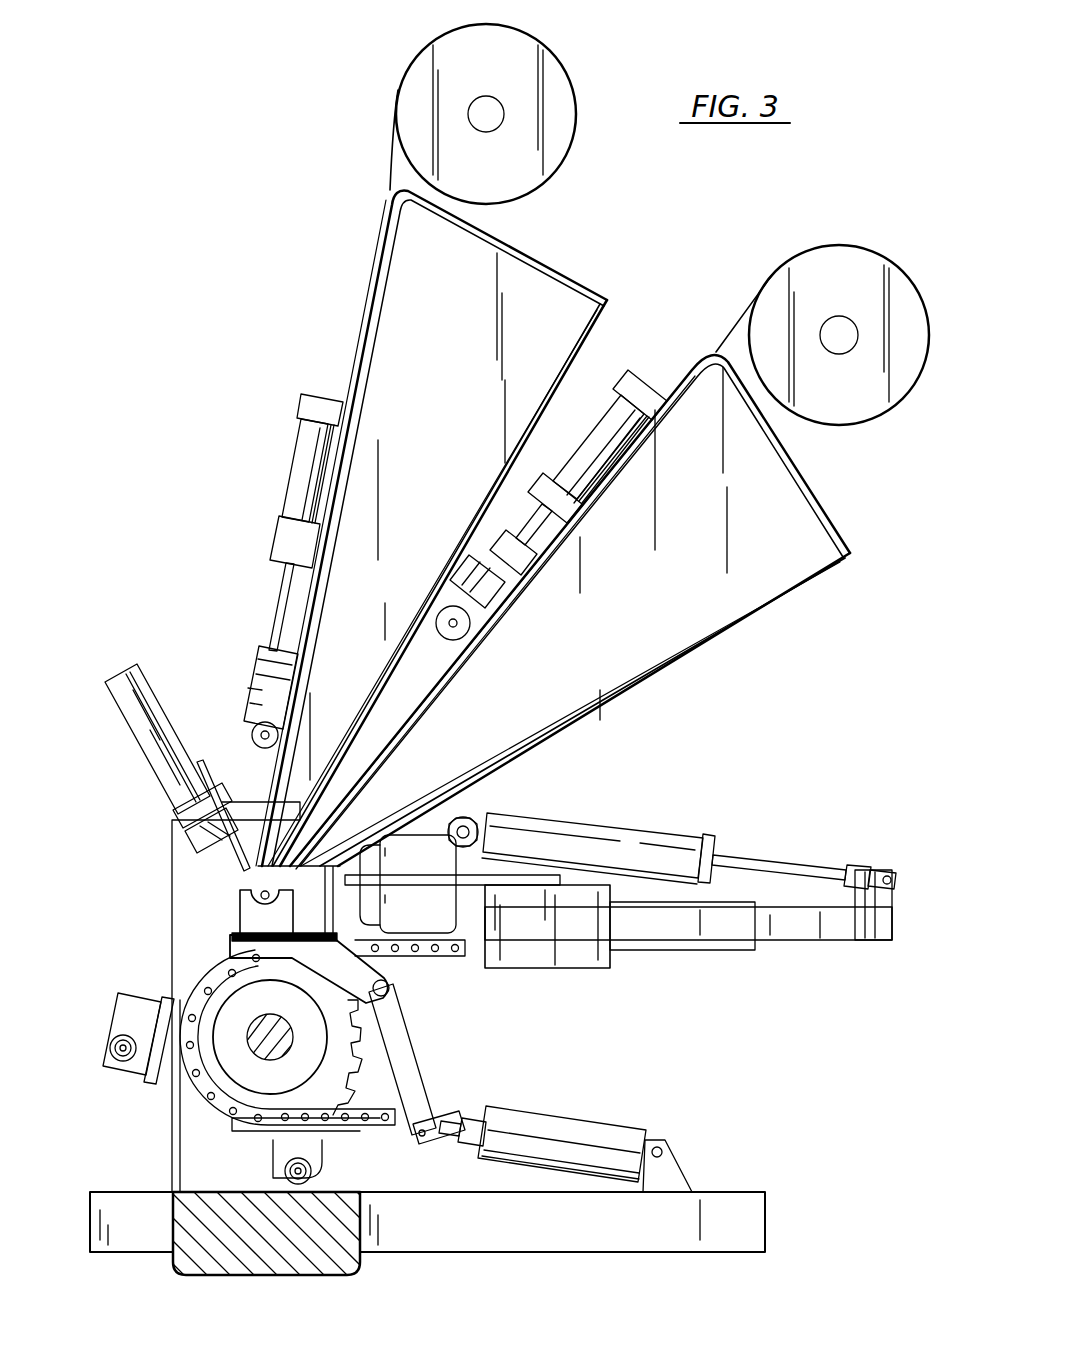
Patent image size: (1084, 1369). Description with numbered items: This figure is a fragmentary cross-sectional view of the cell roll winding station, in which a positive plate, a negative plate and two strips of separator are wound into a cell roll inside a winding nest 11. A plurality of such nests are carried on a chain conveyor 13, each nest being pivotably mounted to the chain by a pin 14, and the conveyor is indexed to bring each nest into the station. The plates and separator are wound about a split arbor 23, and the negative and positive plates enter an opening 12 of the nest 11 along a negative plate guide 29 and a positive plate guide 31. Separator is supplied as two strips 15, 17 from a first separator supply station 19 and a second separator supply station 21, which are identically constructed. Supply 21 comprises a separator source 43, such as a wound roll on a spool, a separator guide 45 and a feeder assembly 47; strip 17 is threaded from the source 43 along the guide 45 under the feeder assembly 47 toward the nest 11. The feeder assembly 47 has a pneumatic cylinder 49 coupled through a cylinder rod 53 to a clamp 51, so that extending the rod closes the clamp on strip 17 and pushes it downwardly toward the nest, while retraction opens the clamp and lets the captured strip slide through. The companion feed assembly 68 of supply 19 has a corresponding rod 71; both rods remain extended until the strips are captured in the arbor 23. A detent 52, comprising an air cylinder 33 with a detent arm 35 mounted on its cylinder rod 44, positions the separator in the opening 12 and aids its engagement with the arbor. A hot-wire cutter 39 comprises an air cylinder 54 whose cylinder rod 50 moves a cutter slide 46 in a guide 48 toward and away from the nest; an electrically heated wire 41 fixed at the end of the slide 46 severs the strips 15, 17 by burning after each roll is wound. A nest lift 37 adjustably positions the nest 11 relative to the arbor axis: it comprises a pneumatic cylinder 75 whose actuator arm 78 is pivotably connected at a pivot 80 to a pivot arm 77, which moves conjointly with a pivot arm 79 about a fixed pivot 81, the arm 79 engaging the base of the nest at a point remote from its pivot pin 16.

The winding nest 11 is at (248, 912).
The opening 12 is at (283, 892).
The chain conveyor 13 is at (462, 962).
The pin 14 is at (167, 1002).
The separator strip 15 is at (391, 168).
The pivot pin 16 is at (172, 1093).
The separator strip 17 is at (735, 312).
The first separator supply station 19 is at (410, 528).
The second separator supply station 21 is at (570, 567).
The split arbor 23 is at (261, 891).
The negative plate guide 29 is at (440, 575).
The positive plate guide 31 is at (572, 693).
The air cylinder 33 is at (152, 720).
The detent arm 35 is at (228, 870).
The nest lift 37 is at (532, 1123).
The hot-wire cutter 39 is at (672, 832).
The electrically heated wire 41 is at (358, 900).
The separator source 43 is at (877, 270).
The cylinder rod 44 is at (190, 838).
The separator guide 45 is at (428, 721).
The cutter slide 46 is at (433, 898).
The feeder assembly 47 is at (551, 498).
The guide 48 is at (578, 968).
The pneumatic cylinder 49 is at (590, 452).
The cylinder rod 50 is at (775, 858).
The clamp 51 is at (500, 596).
The detent 52 is at (161, 775).
The cylinder rod 53 is at (532, 530).
The air cylinder 54 is at (592, 835).
The feed assembly 68 is at (284, 461).
The cylinder rod 71 is at (284, 607).
The pneumatic cylinder 75 is at (577, 1130).
The pivot arm 77 is at (405, 1058).
The actuator arm 78 is at (458, 1147).
The pivot arm 79 is at (343, 969).
The pivot 80 is at (415, 1141).
The fixed pivot 81 is at (392, 986).